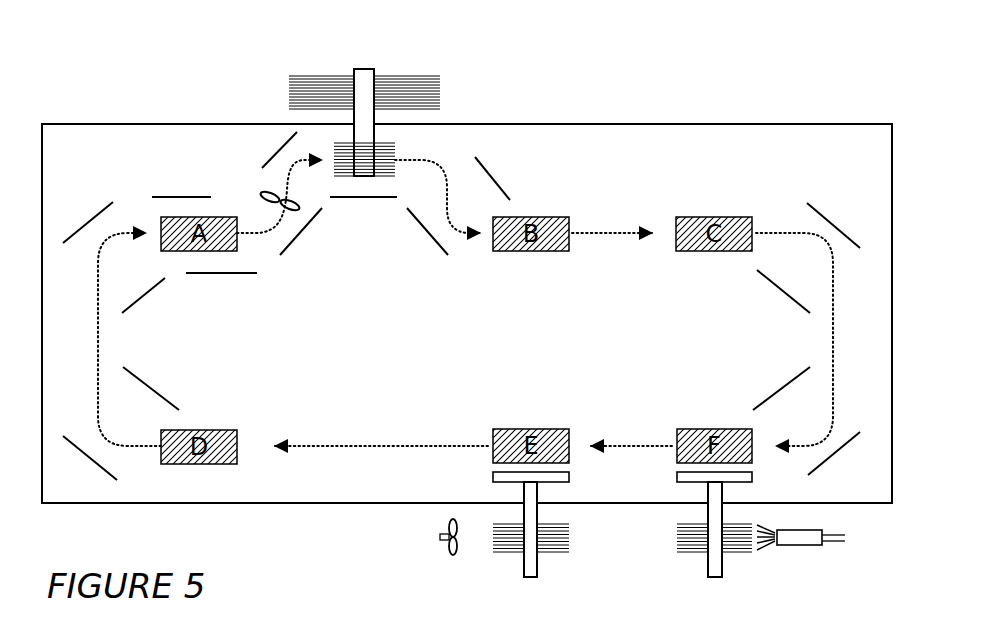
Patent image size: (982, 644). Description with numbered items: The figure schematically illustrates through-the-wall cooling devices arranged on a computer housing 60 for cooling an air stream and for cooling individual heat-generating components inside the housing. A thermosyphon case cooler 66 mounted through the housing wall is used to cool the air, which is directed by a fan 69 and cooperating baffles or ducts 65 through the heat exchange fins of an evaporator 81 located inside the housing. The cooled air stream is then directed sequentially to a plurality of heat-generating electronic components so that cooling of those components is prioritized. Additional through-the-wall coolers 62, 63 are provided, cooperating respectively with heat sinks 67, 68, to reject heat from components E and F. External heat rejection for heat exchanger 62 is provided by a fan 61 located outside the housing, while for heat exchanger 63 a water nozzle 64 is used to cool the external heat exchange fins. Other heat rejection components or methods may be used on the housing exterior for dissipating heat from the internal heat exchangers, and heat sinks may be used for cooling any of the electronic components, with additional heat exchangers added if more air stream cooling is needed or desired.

The enclosure housing 60 is at (800, 124).
The fan 61 is at (443, 537).
The through-the-wall cooler 62 is at (543, 553).
The through-the-wall cooler 63 is at (700, 555).
The water nozzle 64 is at (798, 547).
The baffles or ducts 65 is at (303, 233).
The thermosyphon case cooler 66 is at (362, 68).
The heat sink 67 is at (493, 477).
The heat sink 68 is at (752, 477).
The fan 69 is at (265, 192).
The evaporator 81 is at (395, 145).